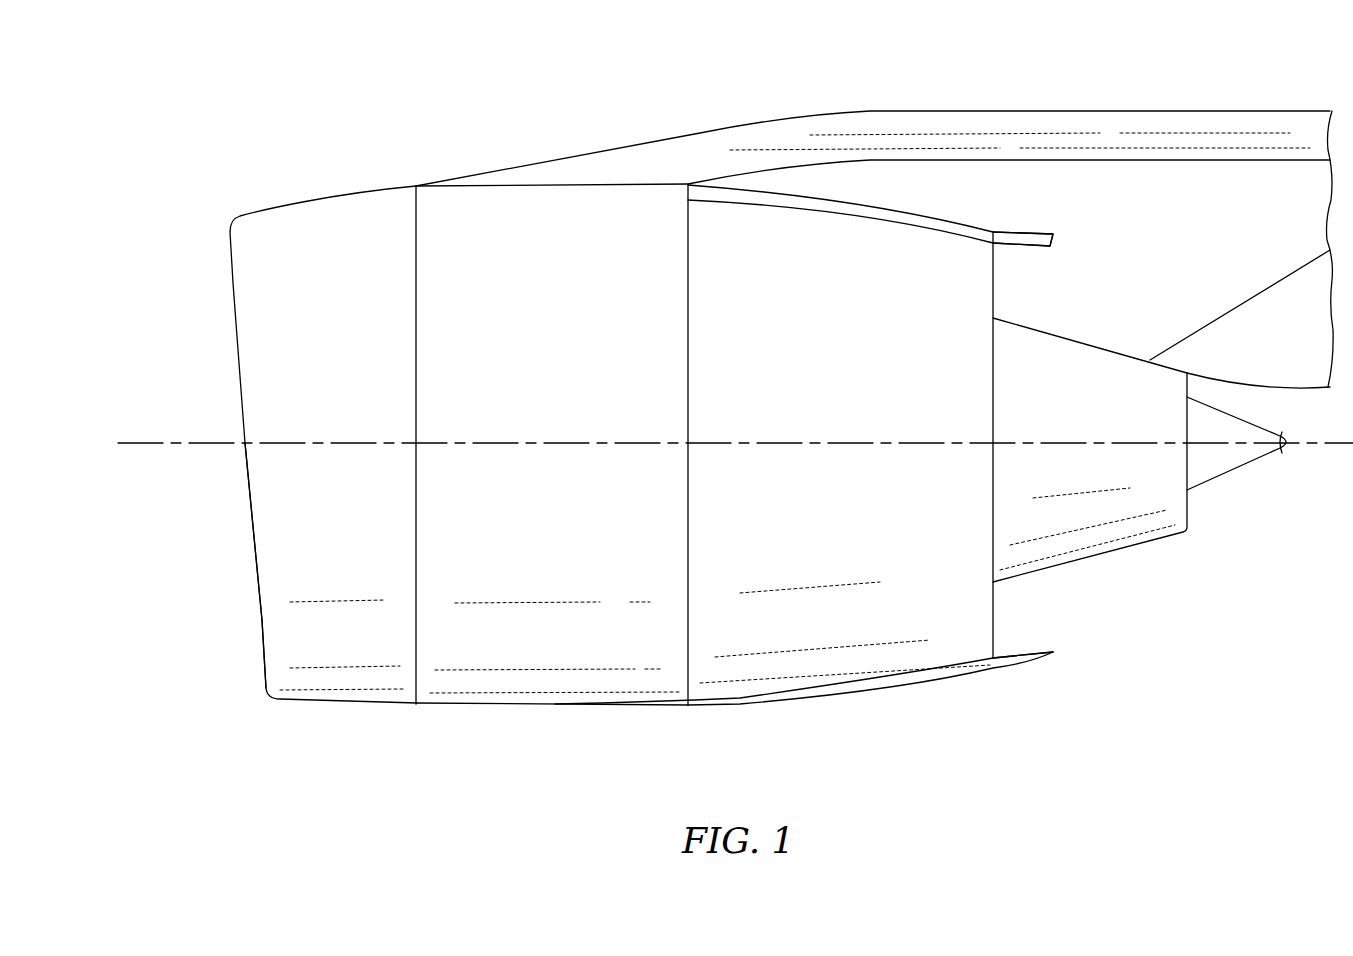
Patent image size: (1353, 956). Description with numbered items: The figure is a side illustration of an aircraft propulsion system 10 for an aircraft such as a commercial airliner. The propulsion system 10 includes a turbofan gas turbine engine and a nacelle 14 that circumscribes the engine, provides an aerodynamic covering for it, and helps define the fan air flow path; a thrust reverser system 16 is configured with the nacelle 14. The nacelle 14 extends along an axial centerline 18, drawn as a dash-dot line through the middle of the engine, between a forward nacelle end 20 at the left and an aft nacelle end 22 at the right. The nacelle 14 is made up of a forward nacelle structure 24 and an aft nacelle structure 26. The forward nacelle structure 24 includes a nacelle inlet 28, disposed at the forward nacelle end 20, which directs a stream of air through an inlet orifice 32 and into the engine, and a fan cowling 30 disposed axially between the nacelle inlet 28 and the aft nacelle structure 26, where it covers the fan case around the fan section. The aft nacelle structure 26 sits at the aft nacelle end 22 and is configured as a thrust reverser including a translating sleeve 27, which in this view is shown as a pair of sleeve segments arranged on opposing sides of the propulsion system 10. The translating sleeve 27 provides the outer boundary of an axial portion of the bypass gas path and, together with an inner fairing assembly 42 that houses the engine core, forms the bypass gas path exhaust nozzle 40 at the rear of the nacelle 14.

The aircraft propulsion system 10 is at (222, 116).
The nacelle 14 is at (408, 184).
The thrust reverser system 16 is at (705, 706).
The axial centerline 18 is at (122, 446).
The forward nacelle end 20 is at (232, 283).
The aft nacelle end 22 is at (1058, 242).
The forward nacelle structure 24 is at (450, 686).
The aft nacelle structure 26 is at (828, 679).
The translating sleeve 27 is at (904, 674).
The nacelle inlet 28 is at (350, 685).
The fan cowling 30 is at (567, 686).
The inlet orifice 32 is at (260, 614).
The bypass gas path exhaust nozzle 40 is at (1053, 652).
The inner fairing assembly 42 is at (1092, 535).